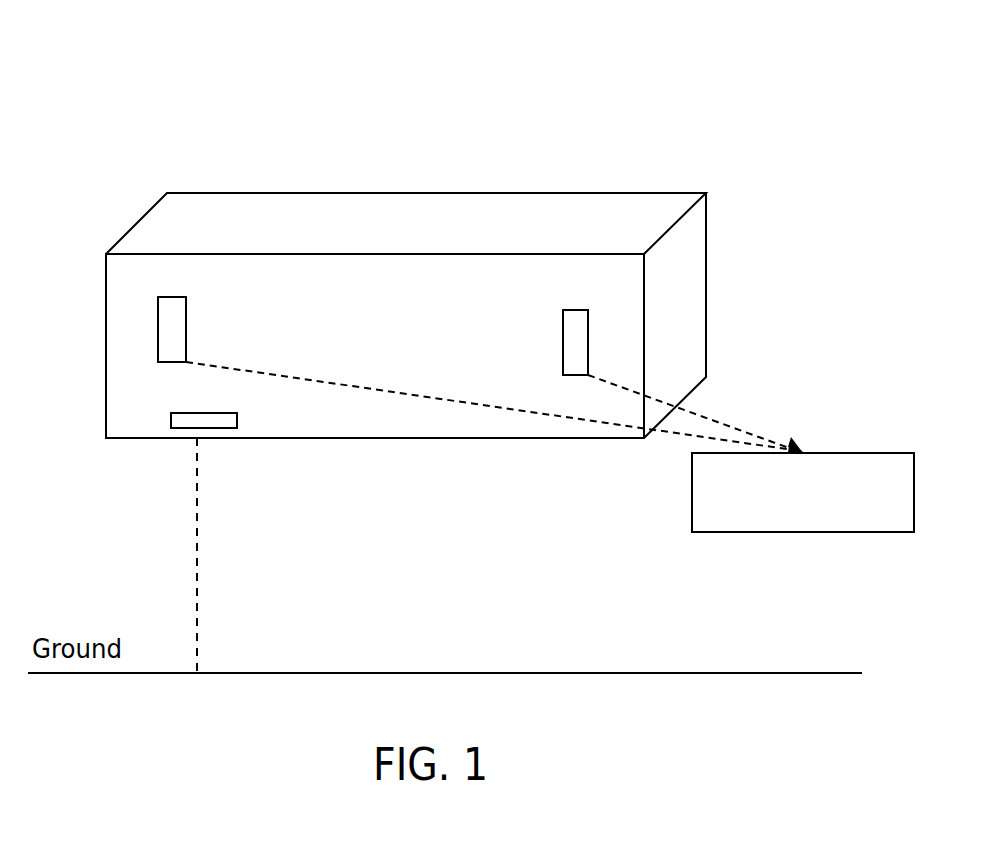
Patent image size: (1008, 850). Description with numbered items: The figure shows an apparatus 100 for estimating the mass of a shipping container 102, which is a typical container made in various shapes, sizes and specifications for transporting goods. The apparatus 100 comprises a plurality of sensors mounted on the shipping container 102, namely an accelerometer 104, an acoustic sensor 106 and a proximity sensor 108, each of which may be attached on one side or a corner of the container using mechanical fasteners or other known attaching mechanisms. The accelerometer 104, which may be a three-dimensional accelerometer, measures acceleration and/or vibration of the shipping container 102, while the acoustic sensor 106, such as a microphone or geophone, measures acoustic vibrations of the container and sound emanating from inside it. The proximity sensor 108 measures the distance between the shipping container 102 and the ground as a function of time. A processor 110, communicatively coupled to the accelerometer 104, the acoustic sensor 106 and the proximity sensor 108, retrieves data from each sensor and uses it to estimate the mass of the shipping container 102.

The apparatus 100 is at (128, 52).
The shipping container 102 is at (640, 192).
The accelerometer 104 is at (157, 330).
The acoustic sensor 106 is at (562, 342).
The proximity sensor 108 is at (237, 428).
The processor 110 is at (803, 492).